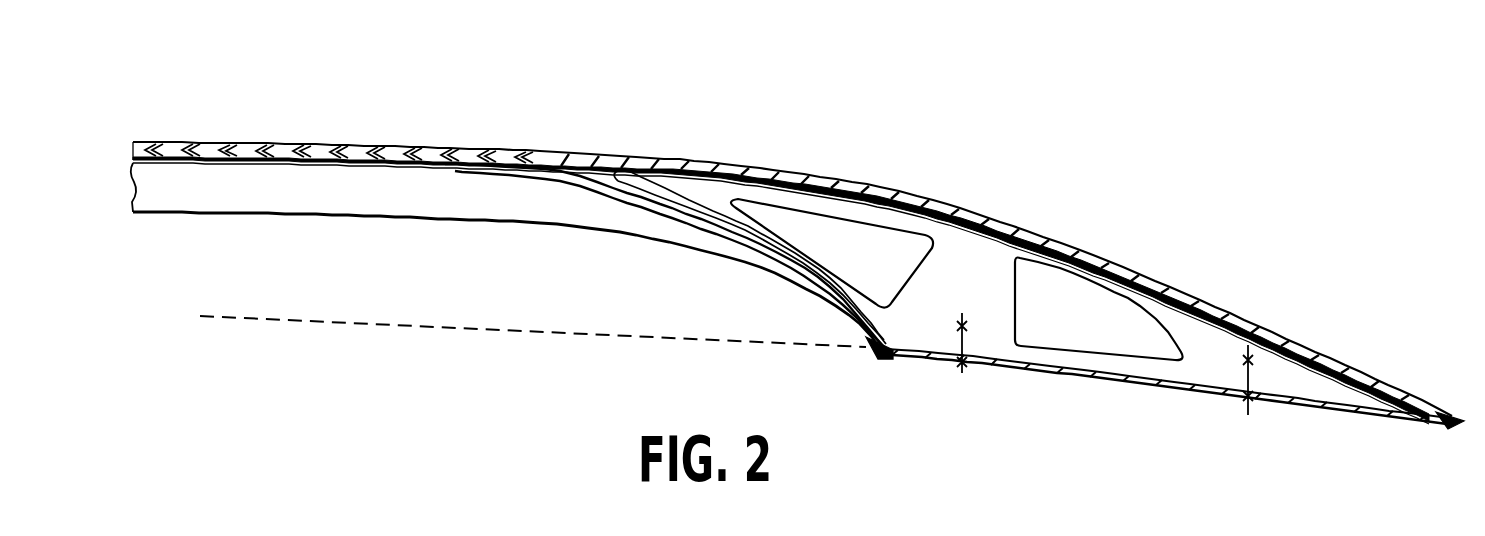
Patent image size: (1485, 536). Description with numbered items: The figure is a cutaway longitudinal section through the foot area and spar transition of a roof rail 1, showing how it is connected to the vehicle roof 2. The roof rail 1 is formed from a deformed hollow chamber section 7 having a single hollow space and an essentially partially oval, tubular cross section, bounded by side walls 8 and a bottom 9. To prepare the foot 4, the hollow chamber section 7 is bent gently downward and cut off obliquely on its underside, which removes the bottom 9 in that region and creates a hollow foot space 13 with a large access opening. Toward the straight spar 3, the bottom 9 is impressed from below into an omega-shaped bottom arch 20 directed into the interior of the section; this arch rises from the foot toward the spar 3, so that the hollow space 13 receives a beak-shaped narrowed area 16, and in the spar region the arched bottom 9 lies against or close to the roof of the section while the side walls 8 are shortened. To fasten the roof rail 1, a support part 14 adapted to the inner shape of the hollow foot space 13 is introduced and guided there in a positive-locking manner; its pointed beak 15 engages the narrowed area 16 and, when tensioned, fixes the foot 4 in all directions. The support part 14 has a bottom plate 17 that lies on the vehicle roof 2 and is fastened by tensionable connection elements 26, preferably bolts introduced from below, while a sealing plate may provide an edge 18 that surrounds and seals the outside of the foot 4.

The roof rail 1 is at (209, 82).
The vehicle roof 2 is at (735, 333).
The spar 3 is at (271, 141).
The foot 4 is at (1062, 236).
The hollow chamber section 7 is at (340, 149).
The side walls 8 is at (268, 193).
The bottom 9 is at (413, 180).
The hollow foot space 13 is at (1325, 351).
The support part 14 is at (1217, 330).
The pointed beak 15 is at (702, 190).
The narrowed area 16 is at (596, 163).
The bottom plate 17 is at (1360, 418).
The edge 18 is at (872, 352).
The bottom arch 20 is at (509, 151).
The tensionable connection elements 26 is at (962, 373).